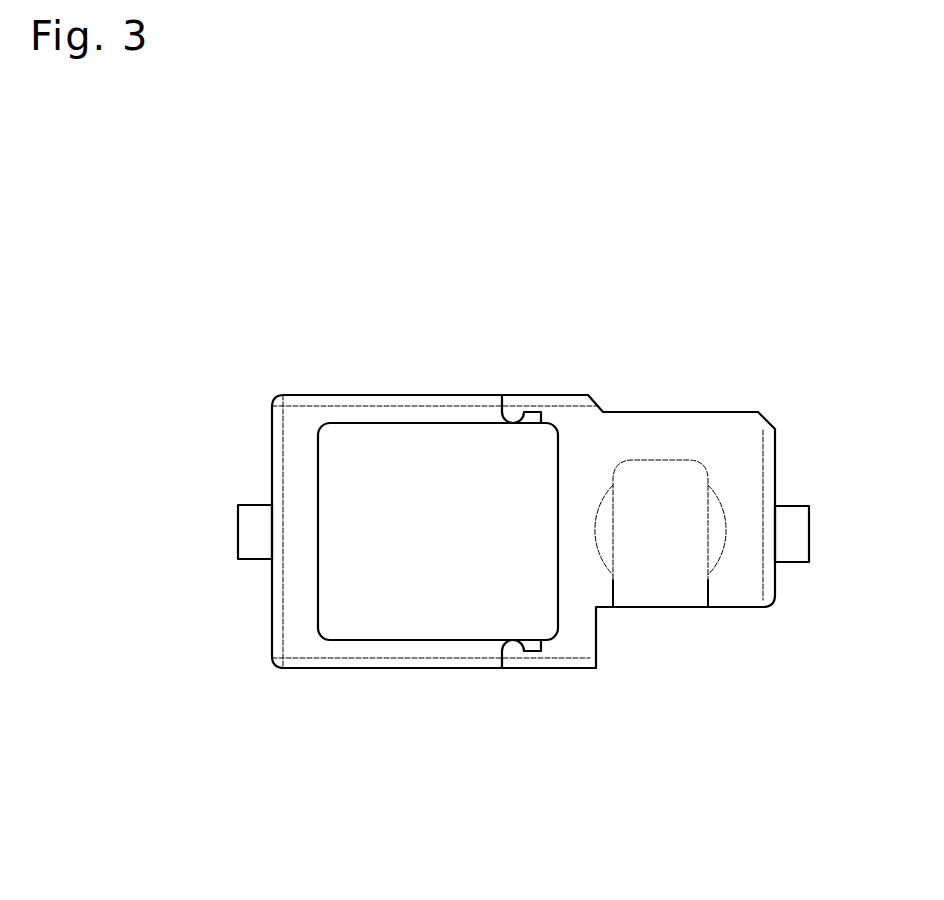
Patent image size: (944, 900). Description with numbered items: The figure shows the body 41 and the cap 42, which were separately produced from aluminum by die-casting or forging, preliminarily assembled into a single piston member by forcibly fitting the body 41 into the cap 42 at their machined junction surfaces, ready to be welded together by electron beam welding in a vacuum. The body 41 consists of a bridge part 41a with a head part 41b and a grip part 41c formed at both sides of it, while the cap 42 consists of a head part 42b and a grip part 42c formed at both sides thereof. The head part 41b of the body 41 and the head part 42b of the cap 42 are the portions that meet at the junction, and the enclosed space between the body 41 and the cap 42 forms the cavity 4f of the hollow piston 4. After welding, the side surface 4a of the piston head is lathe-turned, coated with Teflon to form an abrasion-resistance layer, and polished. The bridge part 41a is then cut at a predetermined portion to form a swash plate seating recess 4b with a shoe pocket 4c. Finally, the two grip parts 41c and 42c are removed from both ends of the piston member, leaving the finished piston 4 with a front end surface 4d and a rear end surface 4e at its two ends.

The piston 4 is at (238, 705).
The side surface 4a is at (362, 660).
The swash plate seating recess 4b is at (670, 563).
The shoe pocket 4c is at (728, 530).
The front end surface 4d is at (285, 470).
The rear end surface 4e is at (765, 463).
The cavity 4f is at (447, 445).
The body 41 is at (664, 397).
The bridge part 41a is at (715, 425).
The head part 41b is at (565, 418).
The grip part 41c is at (795, 532).
The cap 42 is at (302, 384).
The head part 42b is at (357, 398).
The grip part 42c is at (258, 530).